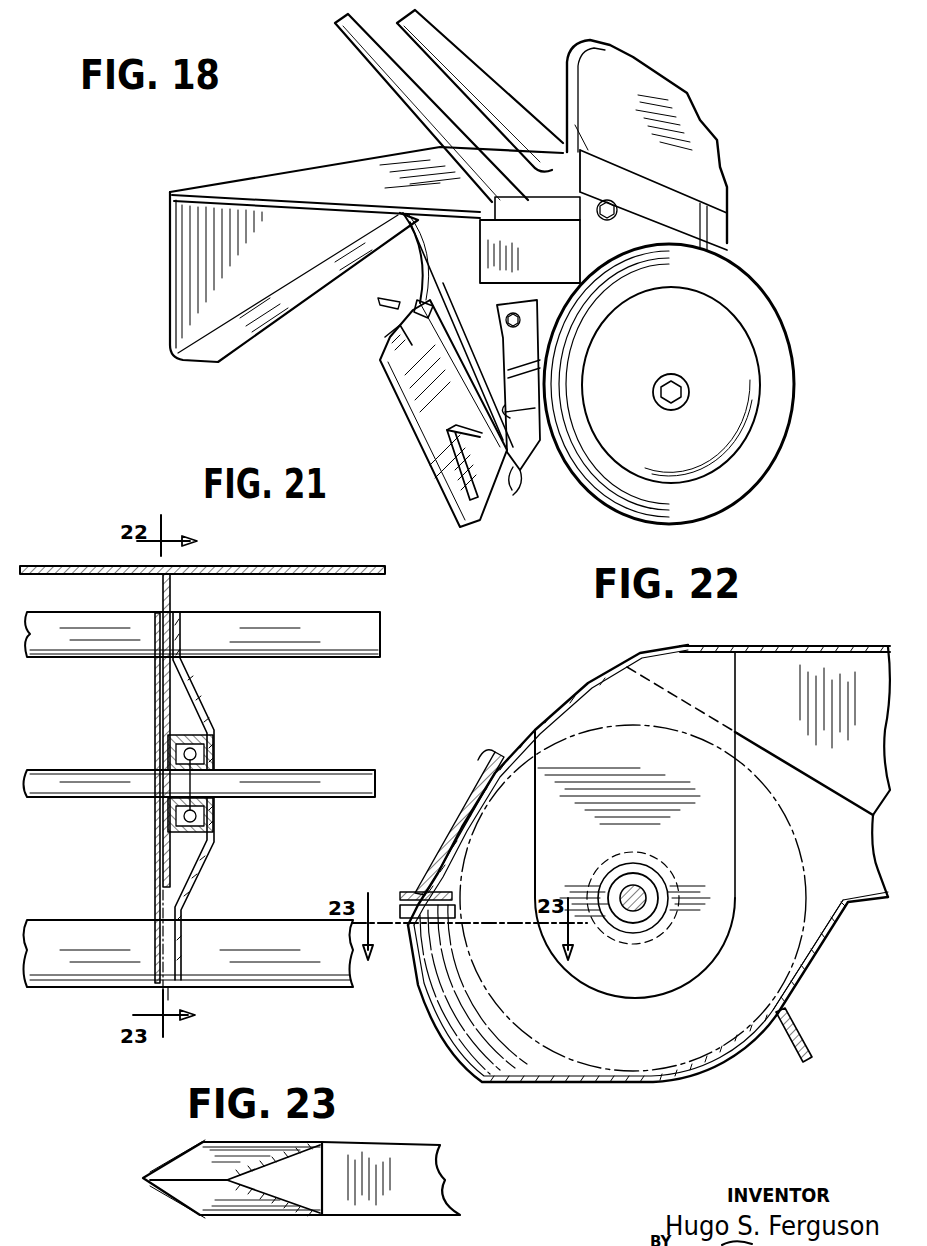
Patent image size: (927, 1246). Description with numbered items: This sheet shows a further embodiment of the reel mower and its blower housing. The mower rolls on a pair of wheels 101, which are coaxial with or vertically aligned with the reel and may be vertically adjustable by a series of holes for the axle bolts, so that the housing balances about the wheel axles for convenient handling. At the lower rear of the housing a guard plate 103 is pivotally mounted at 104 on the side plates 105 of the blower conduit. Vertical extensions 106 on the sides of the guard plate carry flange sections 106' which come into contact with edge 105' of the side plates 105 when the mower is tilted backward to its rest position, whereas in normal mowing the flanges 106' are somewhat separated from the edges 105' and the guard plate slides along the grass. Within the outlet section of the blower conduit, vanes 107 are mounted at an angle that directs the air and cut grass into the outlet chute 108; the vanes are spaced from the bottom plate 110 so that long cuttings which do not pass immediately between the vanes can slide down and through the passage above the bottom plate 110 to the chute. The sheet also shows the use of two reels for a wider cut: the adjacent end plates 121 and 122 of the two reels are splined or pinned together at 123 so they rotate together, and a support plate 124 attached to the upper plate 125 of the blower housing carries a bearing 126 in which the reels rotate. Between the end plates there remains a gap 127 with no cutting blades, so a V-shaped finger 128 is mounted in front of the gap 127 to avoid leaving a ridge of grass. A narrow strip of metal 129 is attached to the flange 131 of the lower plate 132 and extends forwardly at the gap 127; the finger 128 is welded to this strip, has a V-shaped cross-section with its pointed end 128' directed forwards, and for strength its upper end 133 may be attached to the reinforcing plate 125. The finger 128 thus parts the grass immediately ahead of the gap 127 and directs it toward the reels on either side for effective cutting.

In FIG. 18, the wheels 101 is at (770, 398).
In FIG. 18, the guard plate 103 is at (595, 195).
In FIG. 18, the pivot mounting 104 is at (393, 305).
In FIG. 18, the side plates 105 is at (484, 295).
In FIG. 18, the edge 105' is at (542, 403).
In FIG. 18, the vertical extensions 106 is at (410, 416).
In FIG. 18, the flange sections 106' is at (425, 441).
In FIG. 18, the vanes 107 is at (442, 207).
In FIG. 22, the vanes 107 is at (843, 672).
In FIG. 18, the outlet chute 108 is at (285, 230).
In FIG. 18, the bottom plate 110 is at (493, 293).
In FIG. 21, the end plate 121 is at (155, 688).
In FIG. 21, the end plate 122 is at (198, 700).
In FIG. 21, the spline or pin connection 123 is at (212, 770).
In FIG. 21, the support plate 124 is at (171, 603).
In FIG. 22, the support plate 124 is at (572, 817).
In FIG. 21, the upper plate 125 is at (302, 566).
In FIG. 22, the upper plate 125 is at (485, 756).
In FIG. 21, the bearing 126 is at (212, 742).
In FIG. 22, the bearing 126 is at (652, 872).
In FIG. 21, the gap 127 is at (175, 990).
In FIG. 22, the V-shaped finger 128 is at (442, 989).
In FIG. 23, the pointed end 128' is at (212, 1171).
In FIG. 22, the narrow strip of metal 129 is at (535, 1086).
In FIG. 23, the narrow strip of metal 129 is at (372, 1160).
In FIG. 22, the flange 131 is at (800, 1040).
In FIG. 22, the lower plate 132 is at (803, 972).
In FIG. 22, the upper end 133 is at (420, 875).